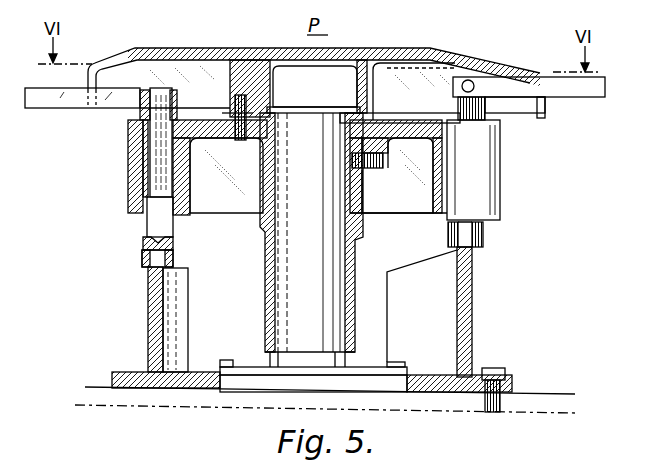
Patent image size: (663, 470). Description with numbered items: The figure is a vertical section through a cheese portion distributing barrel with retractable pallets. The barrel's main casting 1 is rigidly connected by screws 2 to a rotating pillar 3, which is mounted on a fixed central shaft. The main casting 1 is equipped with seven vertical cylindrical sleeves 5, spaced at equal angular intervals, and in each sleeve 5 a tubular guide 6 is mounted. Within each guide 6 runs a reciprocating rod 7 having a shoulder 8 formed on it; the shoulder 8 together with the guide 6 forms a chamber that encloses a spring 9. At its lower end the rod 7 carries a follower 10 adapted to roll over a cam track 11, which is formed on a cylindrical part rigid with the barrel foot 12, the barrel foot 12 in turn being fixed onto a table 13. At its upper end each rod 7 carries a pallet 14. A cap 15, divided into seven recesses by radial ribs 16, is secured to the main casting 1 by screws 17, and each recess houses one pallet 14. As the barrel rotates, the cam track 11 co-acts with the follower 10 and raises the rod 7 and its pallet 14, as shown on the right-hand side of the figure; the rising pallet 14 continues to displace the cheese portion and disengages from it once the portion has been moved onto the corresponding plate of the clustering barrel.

The main casting 1 is at (410, 130).
The screws 2 is at (372, 170).
The rotating pillar 3 is at (290, 268).
The vertical cylindrical sleeves 5 is at (490, 183).
The tubular guide 6 is at (140, 128).
The reciprocating rod 7 is at (157, 172).
The shoulder 8 is at (157, 199).
The spring 9 is at (175, 148).
The follower 10 is at (143, 258).
The cam track 11 is at (447, 293).
The barrel foot 12 is at (420, 377).
The table 13 is at (535, 403).
The pallet 14 is at (75, 104).
The cap 15 is at (243, 62).
The radial ribs 16 is at (440, 57).
The screws 17 is at (285, 156).